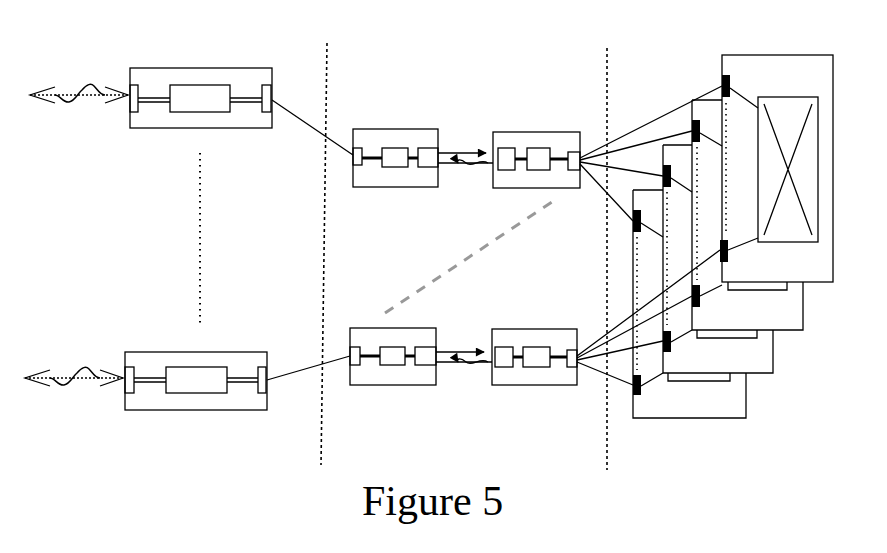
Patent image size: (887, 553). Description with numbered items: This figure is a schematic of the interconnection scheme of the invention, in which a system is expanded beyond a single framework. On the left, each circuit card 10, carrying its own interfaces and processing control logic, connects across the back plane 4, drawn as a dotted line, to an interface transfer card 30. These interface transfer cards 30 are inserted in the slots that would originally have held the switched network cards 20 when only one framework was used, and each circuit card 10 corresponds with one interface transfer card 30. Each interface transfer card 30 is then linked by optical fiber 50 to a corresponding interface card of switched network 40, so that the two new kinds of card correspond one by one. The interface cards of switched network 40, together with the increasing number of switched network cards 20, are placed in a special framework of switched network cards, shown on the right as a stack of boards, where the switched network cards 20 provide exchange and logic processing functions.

The circuit card 10 is at (164, 346).
The back plane 4 is at (592, 102).
The interface transfer card 30 is at (398, 396).
The interface card of switched network 40 is at (533, 396).
The optical fiber 50 is at (471, 334).
The switched network card 20 is at (766, 398).